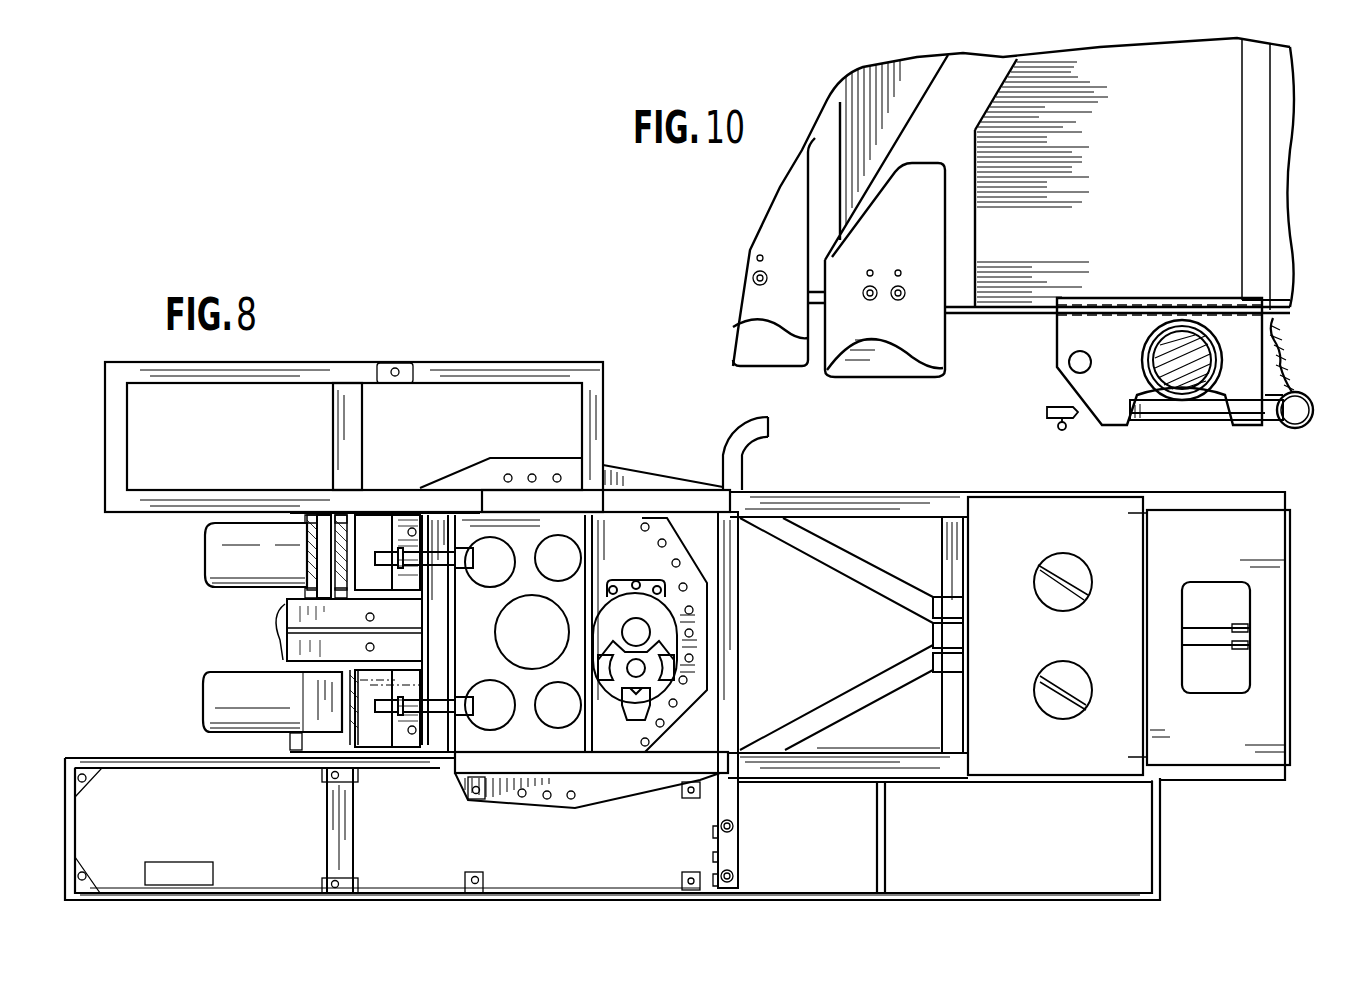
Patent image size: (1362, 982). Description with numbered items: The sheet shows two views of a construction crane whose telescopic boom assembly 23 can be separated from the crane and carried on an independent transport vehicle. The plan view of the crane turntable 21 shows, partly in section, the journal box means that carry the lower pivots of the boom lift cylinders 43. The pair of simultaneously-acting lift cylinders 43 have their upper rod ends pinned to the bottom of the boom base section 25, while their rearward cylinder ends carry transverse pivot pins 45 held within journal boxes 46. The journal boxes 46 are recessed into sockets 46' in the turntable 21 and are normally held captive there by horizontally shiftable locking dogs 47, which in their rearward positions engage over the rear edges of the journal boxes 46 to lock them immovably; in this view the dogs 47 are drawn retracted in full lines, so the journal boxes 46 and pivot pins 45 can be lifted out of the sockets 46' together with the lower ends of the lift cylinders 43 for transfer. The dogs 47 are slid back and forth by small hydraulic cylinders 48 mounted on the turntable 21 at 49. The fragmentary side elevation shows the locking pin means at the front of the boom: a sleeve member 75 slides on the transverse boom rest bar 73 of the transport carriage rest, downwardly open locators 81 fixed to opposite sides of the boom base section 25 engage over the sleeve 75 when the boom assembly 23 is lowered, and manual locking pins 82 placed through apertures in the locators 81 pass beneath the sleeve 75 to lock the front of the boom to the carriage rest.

In FIG. 8, the vertical axis turntable 21 is at (656, 482).
In FIG. 10, the telescopic boom assembly 23 is at (1253, 237).
In FIG. 10, the boom base section 25 is at (1255, 278).
In FIG. 8, the boom lift cylinders 43 is at (262, 576).
In FIG. 8, the transverse pivot pins 45 is at (316, 548).
In FIG. 8, the journal boxes 46 is at (292, 609).
In FIG. 8, the sockets 46' is at (336, 627).
In FIG. 8, the locking dogs 47 is at (388, 525).
In FIG. 8, the hydraulic cylinders 48 is at (452, 566).
In FIG. 8, the cylinder mounting 49 is at (478, 560).
In FIG. 10, the boom rest bar 73 is at (1185, 335).
In FIG. 10, the sleeve member 75 is at (1150, 328).
In FIG. 10, the locators 81 is at (1247, 340).
In FIG. 10, the manual locking pins 82 is at (1060, 405).